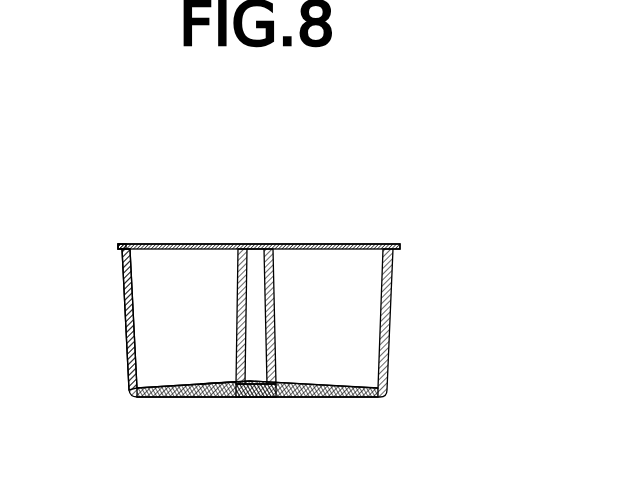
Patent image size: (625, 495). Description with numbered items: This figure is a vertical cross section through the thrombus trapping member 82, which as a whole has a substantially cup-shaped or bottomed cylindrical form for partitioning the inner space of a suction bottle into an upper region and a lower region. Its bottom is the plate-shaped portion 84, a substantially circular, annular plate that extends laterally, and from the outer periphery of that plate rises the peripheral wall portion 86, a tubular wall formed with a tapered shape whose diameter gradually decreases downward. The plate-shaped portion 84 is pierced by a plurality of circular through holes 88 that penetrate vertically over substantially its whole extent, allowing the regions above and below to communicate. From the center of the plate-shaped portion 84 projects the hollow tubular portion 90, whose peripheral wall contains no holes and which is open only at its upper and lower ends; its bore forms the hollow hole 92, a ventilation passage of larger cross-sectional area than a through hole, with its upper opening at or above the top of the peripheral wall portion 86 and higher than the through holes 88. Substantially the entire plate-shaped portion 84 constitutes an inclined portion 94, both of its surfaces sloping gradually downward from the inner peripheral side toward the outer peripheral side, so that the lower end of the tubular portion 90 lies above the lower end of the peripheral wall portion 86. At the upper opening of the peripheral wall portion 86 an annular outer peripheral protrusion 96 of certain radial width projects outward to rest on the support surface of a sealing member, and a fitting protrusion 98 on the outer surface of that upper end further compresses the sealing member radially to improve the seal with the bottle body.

The thrombus trapping member 82 is at (430, 216).
The plate-shaped portion 84 is at (284, 397).
The peripheral wall portion 86 is at (125, 322).
The through holes 88 is at (172, 397).
The tubular portion 90 is at (272, 285).
The hollow hole 92 is at (245, 249).
The inclined portion 94 is at (228, 378).
The outer peripheral protrusion 96 is at (118, 247).
The fitting protrusion 98 is at (124, 266).